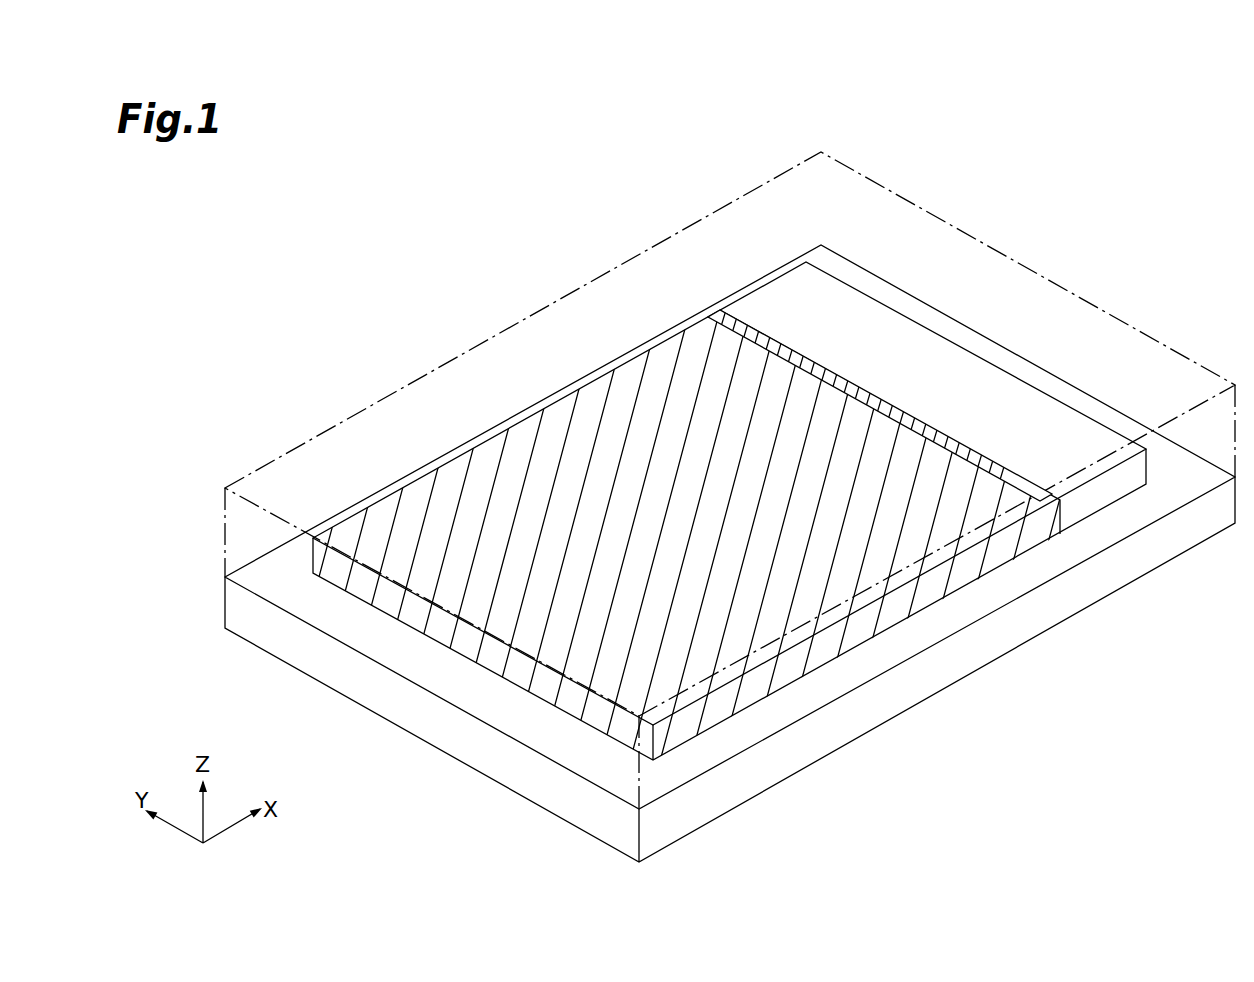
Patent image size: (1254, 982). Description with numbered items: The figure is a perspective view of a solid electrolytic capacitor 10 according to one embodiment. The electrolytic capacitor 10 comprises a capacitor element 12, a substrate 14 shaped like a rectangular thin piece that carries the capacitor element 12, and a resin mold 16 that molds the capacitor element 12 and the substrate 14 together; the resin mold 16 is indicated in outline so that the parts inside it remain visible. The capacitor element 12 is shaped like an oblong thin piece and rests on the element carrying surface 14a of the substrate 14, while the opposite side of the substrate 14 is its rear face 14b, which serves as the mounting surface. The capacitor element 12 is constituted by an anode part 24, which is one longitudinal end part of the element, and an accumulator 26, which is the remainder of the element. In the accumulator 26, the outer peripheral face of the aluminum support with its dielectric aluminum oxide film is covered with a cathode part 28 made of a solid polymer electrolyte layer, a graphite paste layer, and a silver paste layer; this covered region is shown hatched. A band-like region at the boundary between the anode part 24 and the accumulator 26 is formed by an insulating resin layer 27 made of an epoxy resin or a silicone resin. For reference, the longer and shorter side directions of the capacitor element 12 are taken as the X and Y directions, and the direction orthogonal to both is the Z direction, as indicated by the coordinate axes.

The electrolytic capacitor 10 is at (320, 272).
The capacitor element 12 is at (1107, 425).
The substrate 14 is at (222, 602).
The element carrying surface 14a is at (275, 575).
The rear face 14b is at (266, 628).
The resin mold 16 is at (757, 186).
The anode part 24 is at (788, 283).
The accumulator 26 is at (523, 437).
The insulating resin layer 27 is at (842, 382).
The cathode part 28 is at (665, 358).